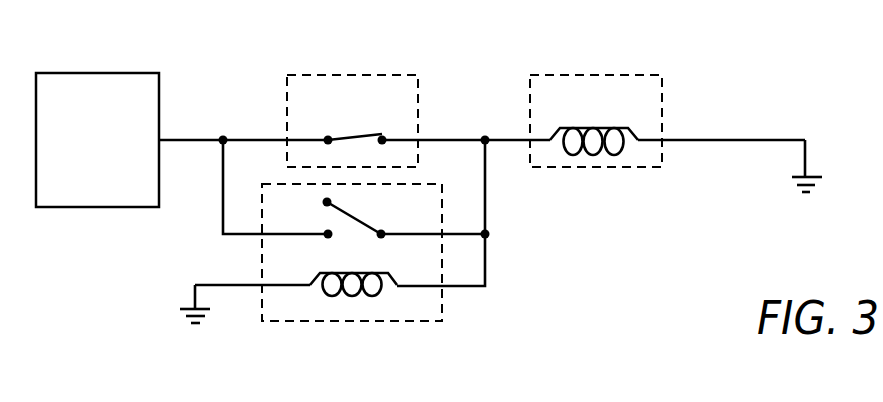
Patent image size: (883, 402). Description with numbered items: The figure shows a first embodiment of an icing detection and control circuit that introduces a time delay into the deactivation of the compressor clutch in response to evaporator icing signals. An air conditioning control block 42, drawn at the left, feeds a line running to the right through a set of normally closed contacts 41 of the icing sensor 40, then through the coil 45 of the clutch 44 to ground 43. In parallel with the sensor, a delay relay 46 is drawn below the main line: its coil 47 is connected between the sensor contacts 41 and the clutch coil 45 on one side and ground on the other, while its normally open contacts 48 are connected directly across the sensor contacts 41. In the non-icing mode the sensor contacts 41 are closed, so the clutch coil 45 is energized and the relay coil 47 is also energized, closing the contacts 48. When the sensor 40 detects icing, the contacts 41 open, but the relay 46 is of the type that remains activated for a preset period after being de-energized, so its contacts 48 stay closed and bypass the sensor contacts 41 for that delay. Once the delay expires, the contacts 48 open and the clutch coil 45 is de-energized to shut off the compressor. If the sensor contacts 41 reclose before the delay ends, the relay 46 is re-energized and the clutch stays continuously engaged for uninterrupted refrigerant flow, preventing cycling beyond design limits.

The icing sensor 40 is at (393, 75).
The normally closed contacts 41 is at (356, 137).
The AC control 42 is at (112, 73).
The ground 43 is at (785, 140).
The clutch 44 is at (638, 75).
The clutch coil 45 is at (586, 127).
The delay relay 46 is at (442, 312).
The relay coil 47 is at (350, 297).
The normally open contacts 48 is at (351, 217).